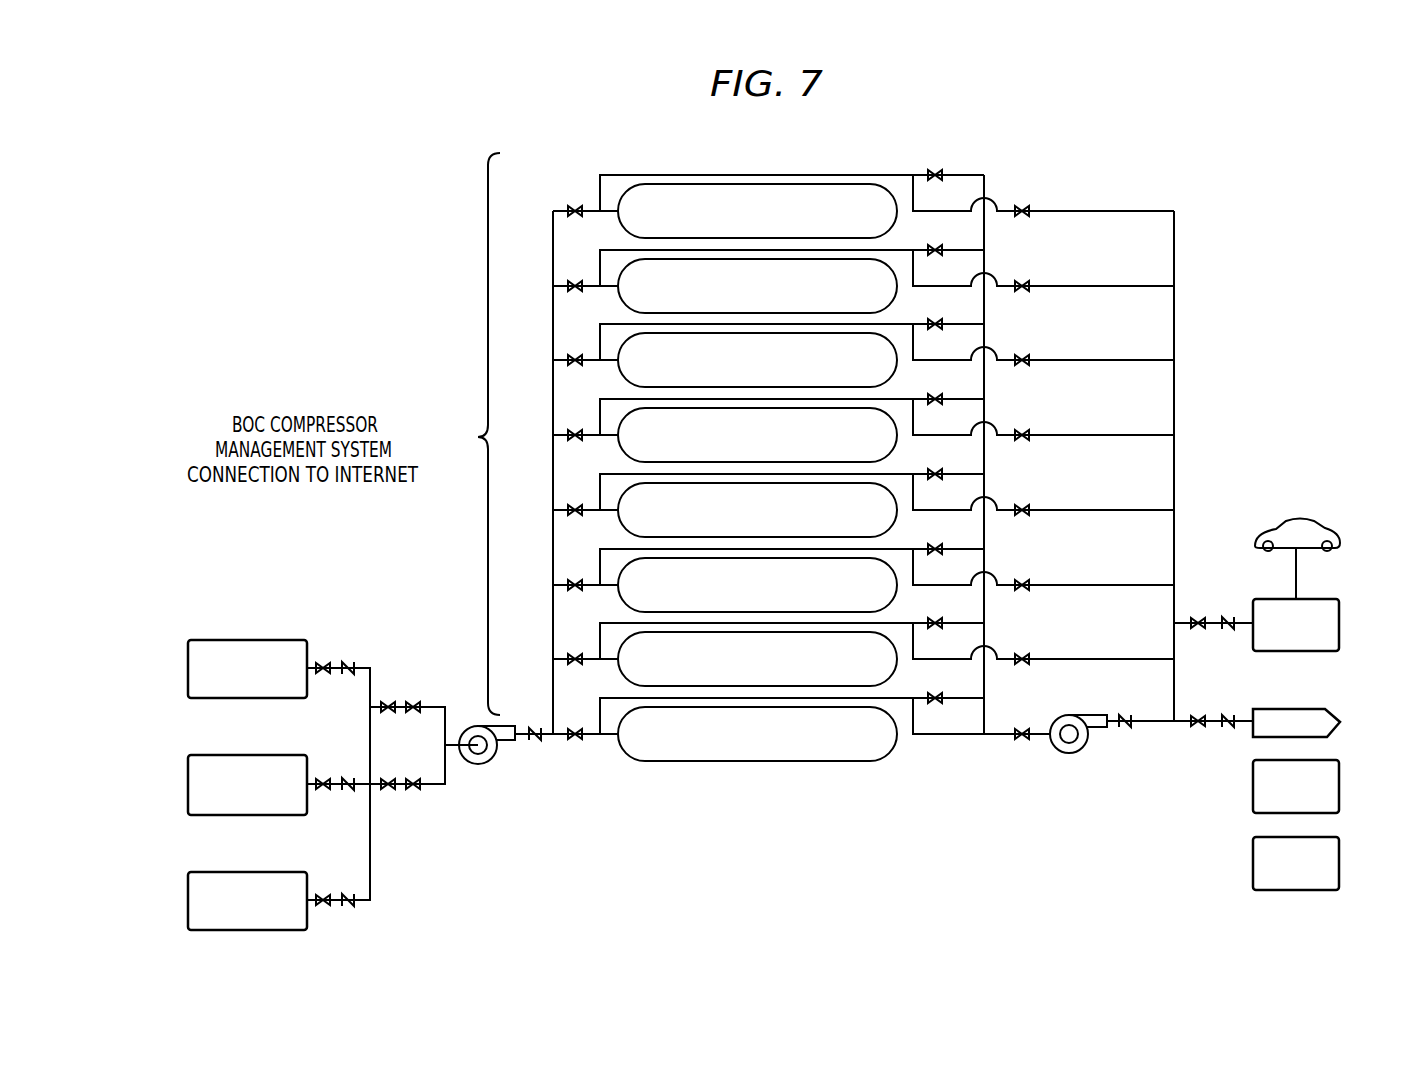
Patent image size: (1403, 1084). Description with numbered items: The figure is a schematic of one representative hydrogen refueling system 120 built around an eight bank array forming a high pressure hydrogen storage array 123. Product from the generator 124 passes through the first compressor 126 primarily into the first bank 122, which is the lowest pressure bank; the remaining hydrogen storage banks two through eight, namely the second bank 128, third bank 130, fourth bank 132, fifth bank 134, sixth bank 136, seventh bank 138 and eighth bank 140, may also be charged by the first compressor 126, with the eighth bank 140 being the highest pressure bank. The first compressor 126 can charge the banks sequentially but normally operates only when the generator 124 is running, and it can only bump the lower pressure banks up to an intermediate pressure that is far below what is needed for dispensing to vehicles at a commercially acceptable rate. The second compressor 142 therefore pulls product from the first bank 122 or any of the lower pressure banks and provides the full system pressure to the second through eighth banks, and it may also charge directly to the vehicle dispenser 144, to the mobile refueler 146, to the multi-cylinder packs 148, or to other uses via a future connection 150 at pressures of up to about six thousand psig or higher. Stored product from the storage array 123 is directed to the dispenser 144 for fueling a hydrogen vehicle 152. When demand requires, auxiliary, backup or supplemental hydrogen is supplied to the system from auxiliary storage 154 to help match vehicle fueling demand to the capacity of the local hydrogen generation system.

The system 120 is at (1278, 218).
The bank 1 122 is at (740, 747).
The high pressure hydrogen storage array 123 is at (666, 457).
The generator 124 is at (202, 755).
The first compressor 126 is at (490, 760).
The bank 2 128 is at (740, 672).
The bank 3 130 is at (740, 598).
The bank 4 132 is at (740, 523).
The bank 5 134 is at (740, 448).
The bank 6 136 is at (740, 373).
The bank 7 138 is at (740, 299).
The bank 8 140 is at (740, 224).
The second compressor 142 is at (1080, 752).
The vehicle dispenser 144 is at (1262, 599).
The mobile refueler 146 is at (1253, 855).
The multi-cylinder packs 148 is at (1253, 785).
The future connection 150 is at (1313, 709).
The hydrogen vehicle 152 is at (1287, 518).
The auxiliary storage 154 is at (202, 640).